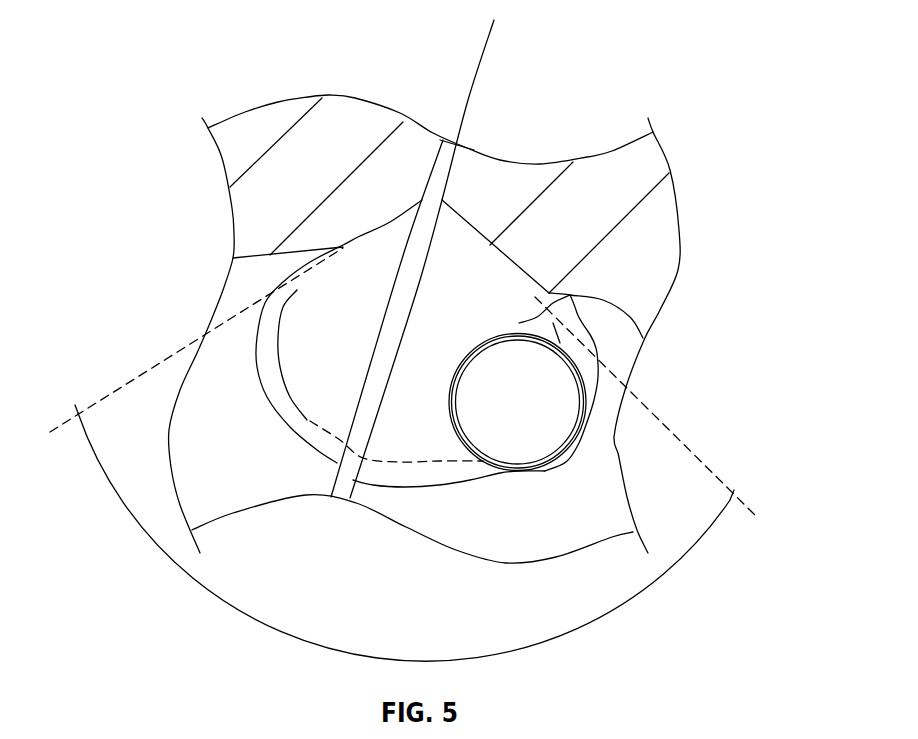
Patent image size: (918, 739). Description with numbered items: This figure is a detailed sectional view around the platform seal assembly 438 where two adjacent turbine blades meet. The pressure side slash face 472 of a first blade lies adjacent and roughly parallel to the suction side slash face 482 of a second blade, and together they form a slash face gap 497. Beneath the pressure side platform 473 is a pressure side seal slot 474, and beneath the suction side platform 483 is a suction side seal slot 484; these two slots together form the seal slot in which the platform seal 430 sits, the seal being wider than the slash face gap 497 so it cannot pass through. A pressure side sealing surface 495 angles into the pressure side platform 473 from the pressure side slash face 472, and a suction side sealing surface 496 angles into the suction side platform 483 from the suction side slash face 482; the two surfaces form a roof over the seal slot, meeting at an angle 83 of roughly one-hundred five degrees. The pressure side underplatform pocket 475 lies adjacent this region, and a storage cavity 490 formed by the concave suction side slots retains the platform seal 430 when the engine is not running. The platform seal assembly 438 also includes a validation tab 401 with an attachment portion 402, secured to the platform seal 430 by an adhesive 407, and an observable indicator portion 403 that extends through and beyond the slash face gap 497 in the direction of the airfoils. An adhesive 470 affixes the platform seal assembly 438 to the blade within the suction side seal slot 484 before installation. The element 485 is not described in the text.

The angle 83 is at (423, 658).
The validation tab 401 is at (512, 35).
The observable indicator portion 403 is at (486, 60).
The pressure side platform 473 is at (338, 118).
The suction side platform 483 is at (543, 172).
The pressure side slash face 472 is at (466, 158).
The slash face gap 497 is at (441, 157).
The suction side slash face 482 is at (442, 187).
The pressure side sealing surface 495 is at (375, 240).
The suction side sealing surface 496 is at (500, 266).
The pressure side seal slot 474 is at (297, 375).
The pressure side underplatform pocket 475 is at (188, 447).
The second side wall 485 is at (592, 467).
The platform seal assembly 438 is at (451, 351).
The attachment portion 402 is at (585, 382).
The platform seal 430 is at (562, 420).
The adhesive 407 is at (560, 345).
The storage cavity 490 is at (570, 295).
The suction side seal slot 484 is at (416, 410).
The adhesive 470 is at (563, 460).